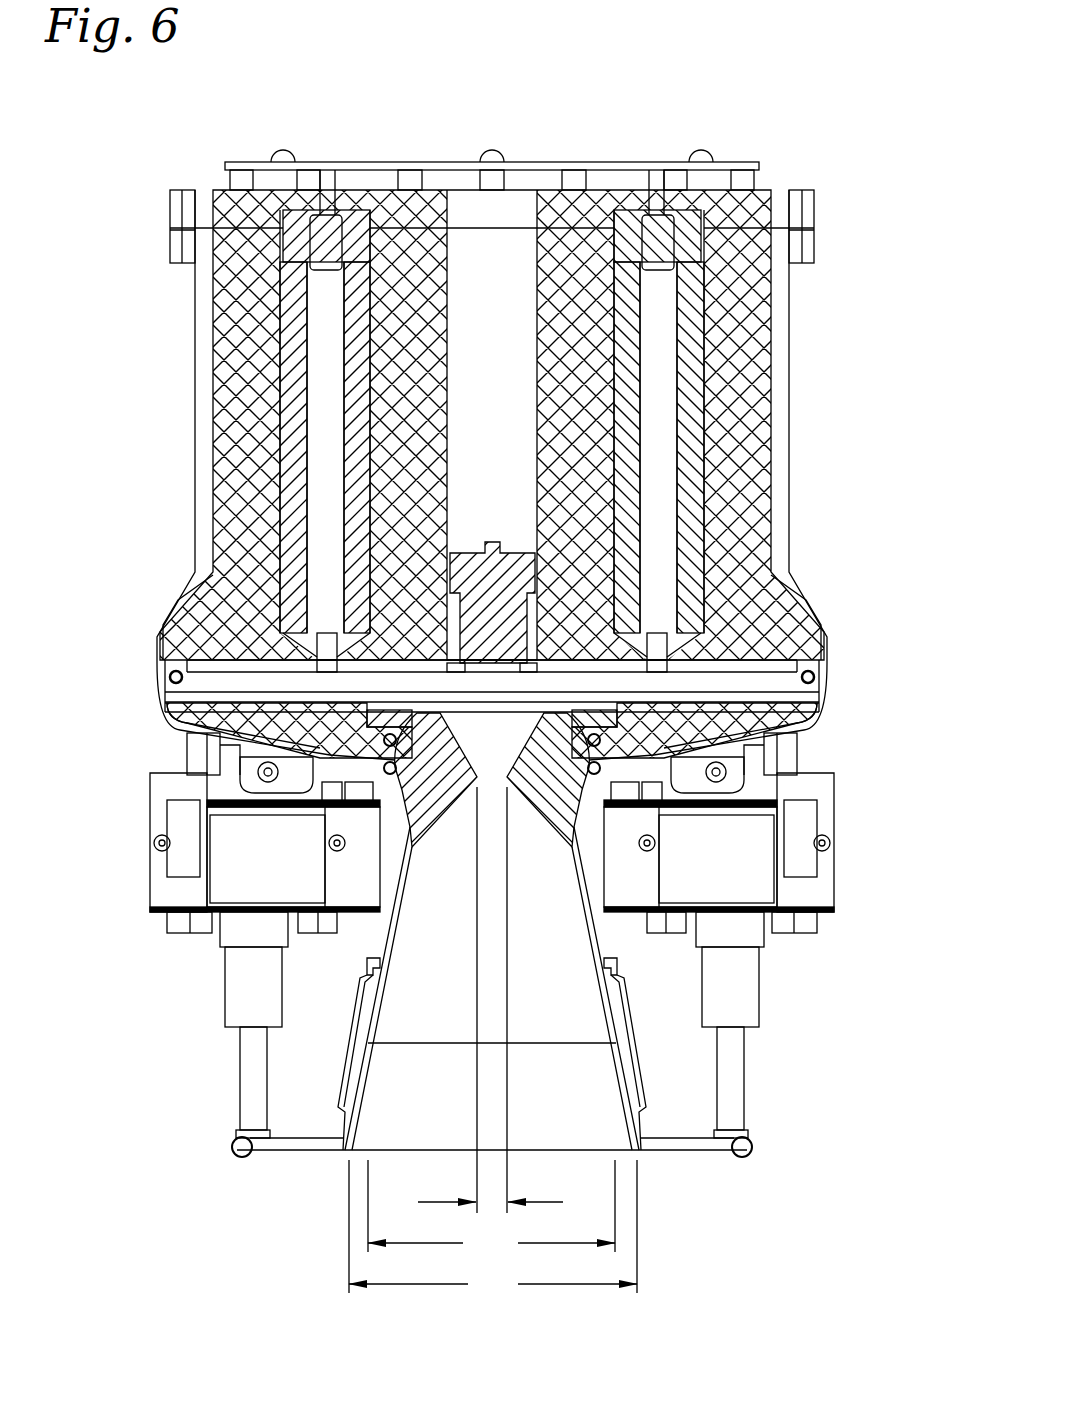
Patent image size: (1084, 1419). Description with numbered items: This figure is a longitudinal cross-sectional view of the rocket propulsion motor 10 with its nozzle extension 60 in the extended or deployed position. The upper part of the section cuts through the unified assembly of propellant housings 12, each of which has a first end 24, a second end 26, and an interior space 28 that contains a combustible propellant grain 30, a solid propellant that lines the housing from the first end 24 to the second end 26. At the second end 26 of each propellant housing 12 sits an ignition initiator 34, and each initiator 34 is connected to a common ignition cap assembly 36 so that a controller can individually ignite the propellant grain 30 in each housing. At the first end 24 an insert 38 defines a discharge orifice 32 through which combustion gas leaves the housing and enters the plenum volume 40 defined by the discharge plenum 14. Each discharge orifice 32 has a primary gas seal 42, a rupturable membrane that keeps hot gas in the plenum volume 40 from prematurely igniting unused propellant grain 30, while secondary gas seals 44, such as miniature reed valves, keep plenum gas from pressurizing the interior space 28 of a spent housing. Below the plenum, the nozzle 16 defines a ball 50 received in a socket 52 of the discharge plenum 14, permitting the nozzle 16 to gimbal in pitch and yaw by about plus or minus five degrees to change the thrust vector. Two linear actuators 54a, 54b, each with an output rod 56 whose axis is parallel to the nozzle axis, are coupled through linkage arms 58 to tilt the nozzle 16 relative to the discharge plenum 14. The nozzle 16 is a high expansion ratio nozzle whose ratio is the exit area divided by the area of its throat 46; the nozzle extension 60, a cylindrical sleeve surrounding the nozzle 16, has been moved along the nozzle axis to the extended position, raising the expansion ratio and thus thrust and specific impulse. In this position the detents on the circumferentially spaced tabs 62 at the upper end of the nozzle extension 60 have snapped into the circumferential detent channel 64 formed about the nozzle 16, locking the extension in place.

The rocket propulsion motor 10 is at (832, 133).
The propellant housing 12 is at (780, 392).
The discharge plenum 14 is at (838, 726).
The nozzle 16 is at (583, 990).
The first end 24 is at (212, 632).
The second end 26 is at (235, 240).
The interior space 28 is at (255, 400).
The combustible propellant grain 30 is at (318, 448).
The discharge orifice 32 is at (668, 650).
The ignition initiator 34 is at (232, 185).
The common ignition cap assembly 36 is at (538, 162).
The insert 38 is at (298, 657).
The plenum volume 40 is at (782, 740).
The primary gas seal 42 is at (322, 618).
The secondary gas seal 44 is at (292, 742).
The throat 46 is at (832, 683).
The ball 50 is at (388, 805).
The socket 52 is at (597, 820).
The actuator 54a is at (745, 993).
The actuator 54b is at (240, 993).
The output rod 56 is at (252, 1083).
The linkage arm 58 is at (292, 1155).
The nozzle extension 60 is at (638, 1085).
The tab 62 is at (368, 960).
The detent channel 64 is at (612, 995).